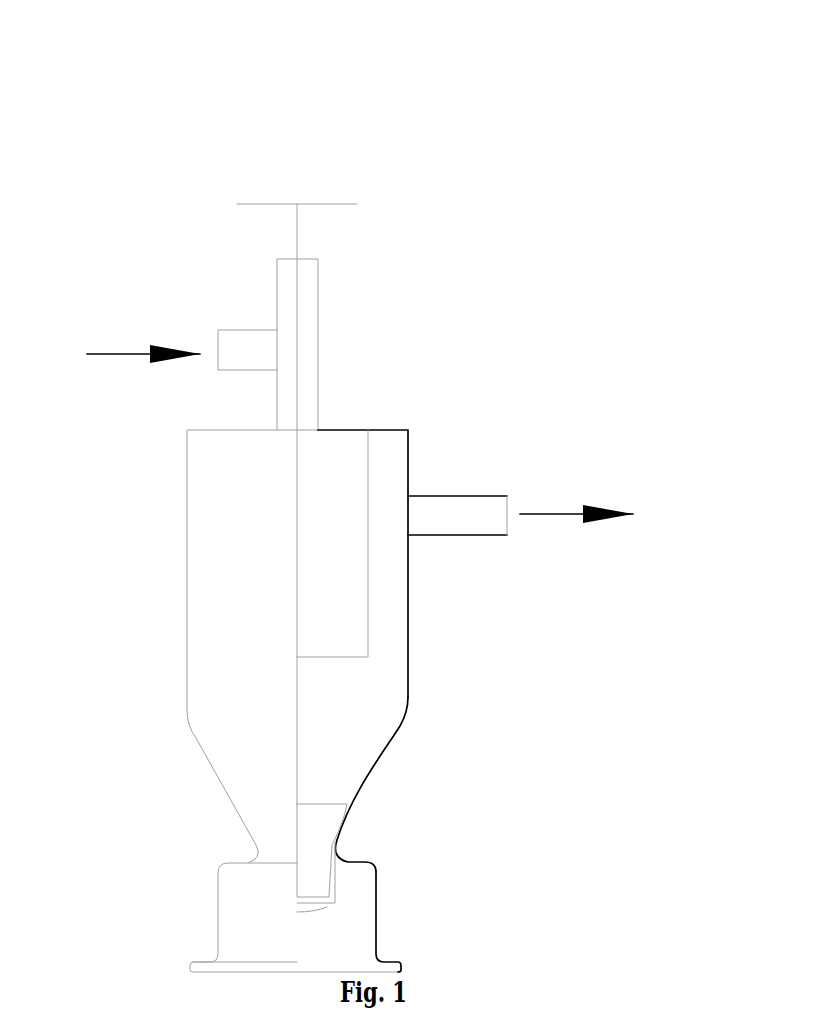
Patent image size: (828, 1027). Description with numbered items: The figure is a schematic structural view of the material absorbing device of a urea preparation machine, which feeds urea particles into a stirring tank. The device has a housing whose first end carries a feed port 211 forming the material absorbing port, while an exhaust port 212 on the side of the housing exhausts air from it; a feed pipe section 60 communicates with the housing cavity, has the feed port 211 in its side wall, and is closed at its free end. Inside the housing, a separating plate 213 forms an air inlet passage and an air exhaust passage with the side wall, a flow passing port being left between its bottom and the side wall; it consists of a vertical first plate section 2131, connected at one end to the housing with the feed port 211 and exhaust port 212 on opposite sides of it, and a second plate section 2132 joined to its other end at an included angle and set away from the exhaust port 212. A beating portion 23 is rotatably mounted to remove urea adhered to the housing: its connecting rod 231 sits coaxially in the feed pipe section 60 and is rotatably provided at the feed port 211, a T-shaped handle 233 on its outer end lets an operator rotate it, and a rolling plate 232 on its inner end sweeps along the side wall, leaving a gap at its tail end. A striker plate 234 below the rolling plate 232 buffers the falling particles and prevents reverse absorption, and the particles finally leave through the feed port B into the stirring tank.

The beating portion 23 is at (240, 160).
The T-shaped handle 233 is at (297, 204).
The feed pipe section 60 is at (308, 352).
The feed port 211 is at (238, 348).
The separating plate 213 is at (552, 612).
The first plate section 2131 is at (368, 612).
The second plate section 2132 is at (333, 657).
The connecting rod 231 is at (297, 475).
The exhaust port 212 is at (507, 513).
The rolling plate 232 is at (320, 803).
The striker plate 234 is at (325, 908).
The feed port of the material absorbing device B is at (290, 945).